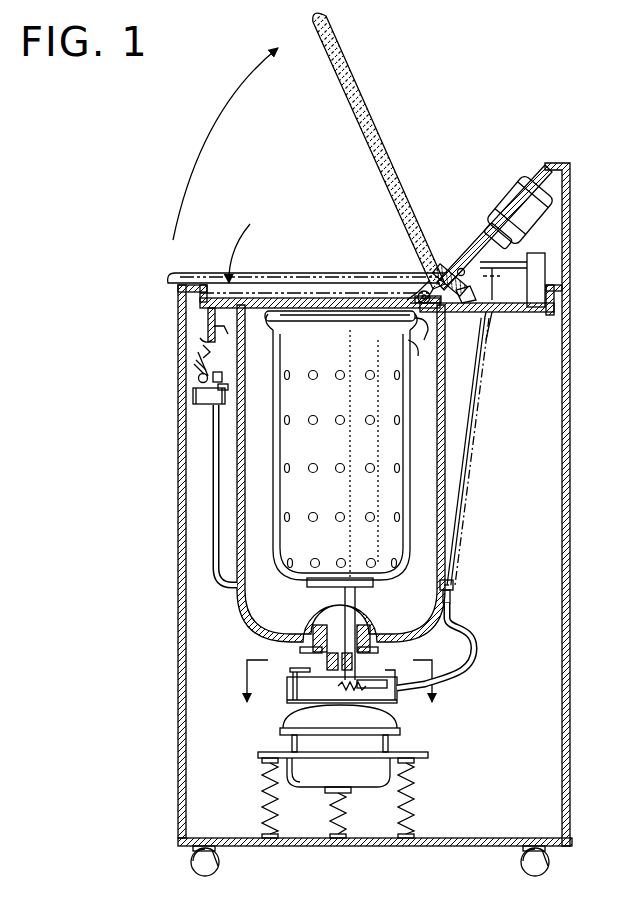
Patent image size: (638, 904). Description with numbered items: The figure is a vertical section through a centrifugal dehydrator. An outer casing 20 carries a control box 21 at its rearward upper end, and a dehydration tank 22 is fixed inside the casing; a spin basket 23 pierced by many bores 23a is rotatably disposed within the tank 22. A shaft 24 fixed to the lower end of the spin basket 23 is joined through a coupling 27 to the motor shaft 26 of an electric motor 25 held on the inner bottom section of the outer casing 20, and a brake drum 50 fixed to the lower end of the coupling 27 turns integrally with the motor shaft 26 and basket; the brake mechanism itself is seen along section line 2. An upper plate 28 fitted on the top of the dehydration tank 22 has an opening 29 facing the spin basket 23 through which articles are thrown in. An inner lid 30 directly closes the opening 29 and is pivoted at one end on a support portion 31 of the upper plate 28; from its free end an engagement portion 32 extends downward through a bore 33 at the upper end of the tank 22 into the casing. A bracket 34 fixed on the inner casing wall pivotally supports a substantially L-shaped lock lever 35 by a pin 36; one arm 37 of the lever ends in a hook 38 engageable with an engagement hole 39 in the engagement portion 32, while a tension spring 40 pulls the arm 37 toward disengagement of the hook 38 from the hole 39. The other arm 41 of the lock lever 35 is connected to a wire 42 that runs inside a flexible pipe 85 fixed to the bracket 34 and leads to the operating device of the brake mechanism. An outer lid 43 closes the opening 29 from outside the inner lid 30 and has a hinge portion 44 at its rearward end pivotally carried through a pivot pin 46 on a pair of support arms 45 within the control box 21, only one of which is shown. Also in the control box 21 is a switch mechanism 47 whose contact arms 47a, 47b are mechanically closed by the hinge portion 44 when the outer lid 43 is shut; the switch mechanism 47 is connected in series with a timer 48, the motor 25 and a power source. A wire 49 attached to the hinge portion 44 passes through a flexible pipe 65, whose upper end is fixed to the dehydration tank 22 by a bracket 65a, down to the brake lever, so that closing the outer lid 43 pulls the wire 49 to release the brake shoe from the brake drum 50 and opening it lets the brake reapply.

The section line 2 is at (338, 697).
The outer casing 20 is at (570, 442).
The control box 21 is at (572, 243).
The dehydration tank 22 is at (440, 498).
The spin basket 23 is at (336, 451).
The bores 23a is at (340, 521).
The shaft 24 is at (352, 605).
The electric motor 25 is at (393, 752).
The motor shaft 26 is at (363, 658).
The coupling 27 is at (327, 660).
The upper plate 28 is at (424, 356).
The opening 29 is at (372, 302).
The inner lid 30 is at (316, 294).
The support portion 31 is at (428, 330).
The engagement portion 32 is at (207, 322).
The bore 33 is at (210, 297).
The bracket 34 is at (200, 412).
The lock lever 35 is at (204, 362).
The pin 36 is at (204, 383).
The arm 37 is at (205, 357).
The hook 38 is at (208, 334).
The engagement hole 39 is at (216, 334).
The tension spring 40 is at (205, 350).
The arm 41 is at (222, 374).
The wire 42 is at (228, 398).
The outer lid 43 is at (352, 80).
The hinge portion 44 is at (418, 290).
The support arms 45 is at (447, 278).
The pivot pin 46 is at (462, 268).
The switch mechanism 47 is at (548, 275).
The contact arm 47a is at (520, 258).
The contact arm 47b is at (513, 332).
The timer 48 is at (526, 198).
The wire 49 is at (468, 383).
The brake drum 50 is at (310, 689).
The flexible pipe 65 is at (454, 620).
The bracket 65a is at (454, 592).
The flexible pipe 85 is at (216, 514).